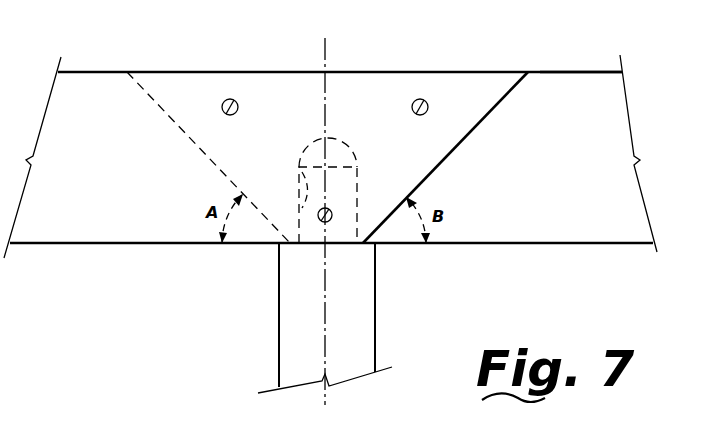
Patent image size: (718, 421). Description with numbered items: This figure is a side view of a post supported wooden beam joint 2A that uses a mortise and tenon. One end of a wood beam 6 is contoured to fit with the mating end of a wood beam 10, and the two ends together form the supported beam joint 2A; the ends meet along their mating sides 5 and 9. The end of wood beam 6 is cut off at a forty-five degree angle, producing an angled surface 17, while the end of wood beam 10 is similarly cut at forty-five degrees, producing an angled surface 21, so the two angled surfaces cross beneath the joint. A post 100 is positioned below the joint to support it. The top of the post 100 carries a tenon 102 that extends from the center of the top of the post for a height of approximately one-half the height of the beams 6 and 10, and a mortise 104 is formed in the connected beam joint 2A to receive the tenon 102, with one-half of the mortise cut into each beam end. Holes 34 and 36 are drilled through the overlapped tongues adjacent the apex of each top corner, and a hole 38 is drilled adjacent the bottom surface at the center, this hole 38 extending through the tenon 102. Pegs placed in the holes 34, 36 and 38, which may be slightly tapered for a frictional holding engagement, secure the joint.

The wood beam 10 is at (104, 72).
The mating side 9 is at (112, 172).
The mating side 5 is at (572, 172).
The wood beam 6 is at (562, 71).
The wood beam joint 2A is at (337, 64).
The drill hole 34 is at (231, 99).
The drill hole 36 is at (423, 99).
The angled surface 17 is at (205, 160).
The angled surface 21 is at (502, 102).
The tenon 102 is at (344, 184).
The mortise 104 is at (303, 178).
The drill hole 38 is at (320, 221).
The post 100 is at (350, 294).